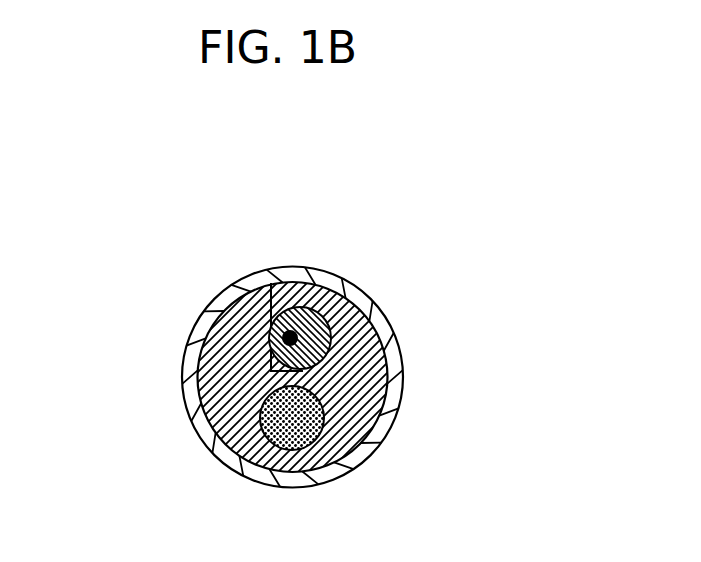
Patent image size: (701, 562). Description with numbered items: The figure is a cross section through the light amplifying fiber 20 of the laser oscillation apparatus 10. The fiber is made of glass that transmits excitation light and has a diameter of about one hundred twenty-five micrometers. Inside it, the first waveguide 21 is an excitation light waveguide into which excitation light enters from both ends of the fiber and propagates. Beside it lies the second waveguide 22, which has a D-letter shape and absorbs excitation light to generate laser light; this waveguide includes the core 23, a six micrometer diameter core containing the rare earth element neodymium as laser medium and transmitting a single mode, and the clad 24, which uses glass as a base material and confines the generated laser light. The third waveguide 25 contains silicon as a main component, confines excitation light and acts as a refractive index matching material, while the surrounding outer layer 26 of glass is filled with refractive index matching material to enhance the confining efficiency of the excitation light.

The laser oscillation apparatus 10 is at (314, 171).
The light amplifying fiber 20 is at (192, 446).
The first waveguide 21 is at (262, 410).
The second waveguide 22 is at (270, 320).
The core 23 is at (331, 291).
The clad 24 is at (271, 300).
The third waveguide 25 is at (368, 360).
The outer layer 26 is at (377, 433).